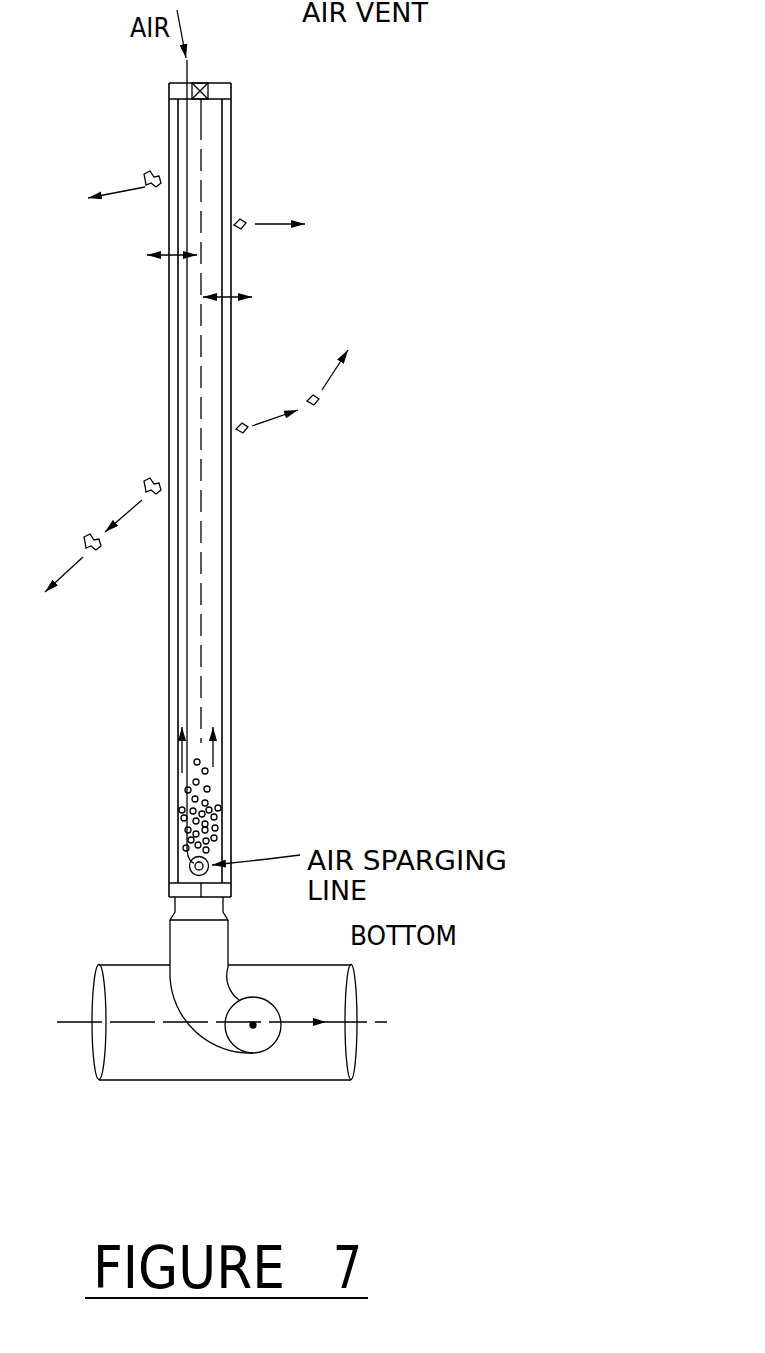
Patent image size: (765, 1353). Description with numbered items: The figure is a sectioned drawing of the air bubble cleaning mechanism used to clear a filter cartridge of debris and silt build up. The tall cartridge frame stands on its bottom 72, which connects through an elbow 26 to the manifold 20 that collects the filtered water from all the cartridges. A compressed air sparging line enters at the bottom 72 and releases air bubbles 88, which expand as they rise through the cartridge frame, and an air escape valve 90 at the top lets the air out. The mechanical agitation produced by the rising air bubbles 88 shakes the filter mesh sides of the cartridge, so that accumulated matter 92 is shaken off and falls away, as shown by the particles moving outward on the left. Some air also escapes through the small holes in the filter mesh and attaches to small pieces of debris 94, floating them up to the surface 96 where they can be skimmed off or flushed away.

The manifold 20 is at (224, 1061).
The elbow 26 is at (215, 1038).
The bottom 72 is at (257, 927).
The air bubbles 88 is at (259, 806).
The air escape valve 90 is at (244, 49).
The accumulated matter 92 is at (103, 496).
The small particles 94 is at (275, 389).
The surface 96 is at (356, 405).